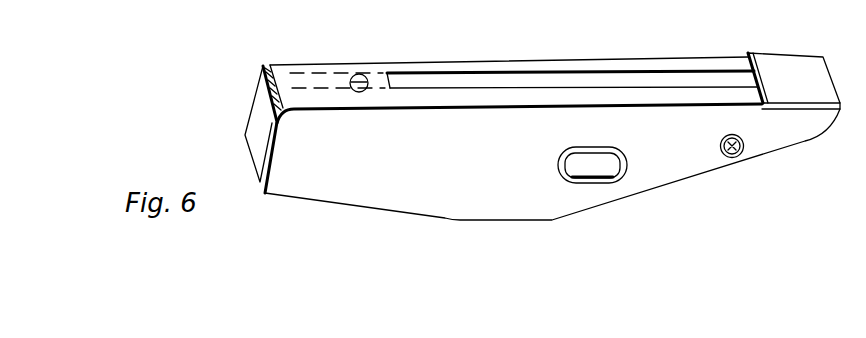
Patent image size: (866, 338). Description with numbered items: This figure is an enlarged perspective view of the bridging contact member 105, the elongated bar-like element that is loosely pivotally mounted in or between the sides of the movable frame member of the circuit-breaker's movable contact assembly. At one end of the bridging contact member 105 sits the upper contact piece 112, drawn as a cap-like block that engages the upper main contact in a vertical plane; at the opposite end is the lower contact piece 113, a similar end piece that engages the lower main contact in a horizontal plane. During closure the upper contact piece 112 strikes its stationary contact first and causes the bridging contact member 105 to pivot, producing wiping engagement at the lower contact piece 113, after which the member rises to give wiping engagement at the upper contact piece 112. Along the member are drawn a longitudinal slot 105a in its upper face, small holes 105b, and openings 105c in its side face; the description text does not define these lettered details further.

The bridging contact member 105 is at (671, 166).
The slot 105a is at (473, 100).
The holes 105b is at (318, 84).
The openings 105c is at (590, 184).
The upper contact piece 112 is at (775, 70).
The lower contact piece 113 is at (257, 141).